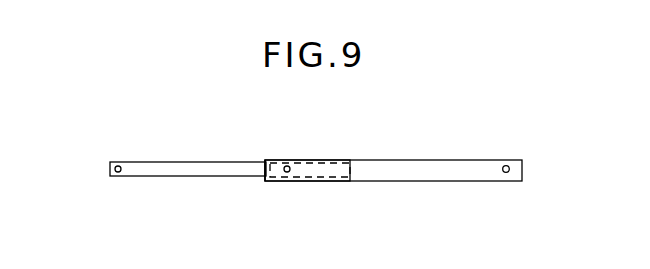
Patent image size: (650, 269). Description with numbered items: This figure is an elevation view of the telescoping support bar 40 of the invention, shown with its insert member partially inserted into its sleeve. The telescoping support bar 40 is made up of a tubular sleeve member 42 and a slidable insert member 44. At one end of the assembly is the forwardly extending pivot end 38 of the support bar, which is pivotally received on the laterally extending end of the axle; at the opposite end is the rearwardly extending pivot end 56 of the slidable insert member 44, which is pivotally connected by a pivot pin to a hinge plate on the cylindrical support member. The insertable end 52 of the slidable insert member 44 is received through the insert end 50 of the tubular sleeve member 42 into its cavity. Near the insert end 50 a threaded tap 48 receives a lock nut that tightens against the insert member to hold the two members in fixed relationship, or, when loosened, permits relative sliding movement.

The pivot end 38 is at (523, 163).
The telescoping support bar 40 is at (305, 160).
The tubular sleeve member 42 is at (389, 181).
The slidable insert member 44 is at (175, 178).
The threaded tap 48 is at (285, 171).
The insert end 50 is at (262, 162).
The insertable end 52 is at (352, 170).
The pivot end 56 is at (110, 166).